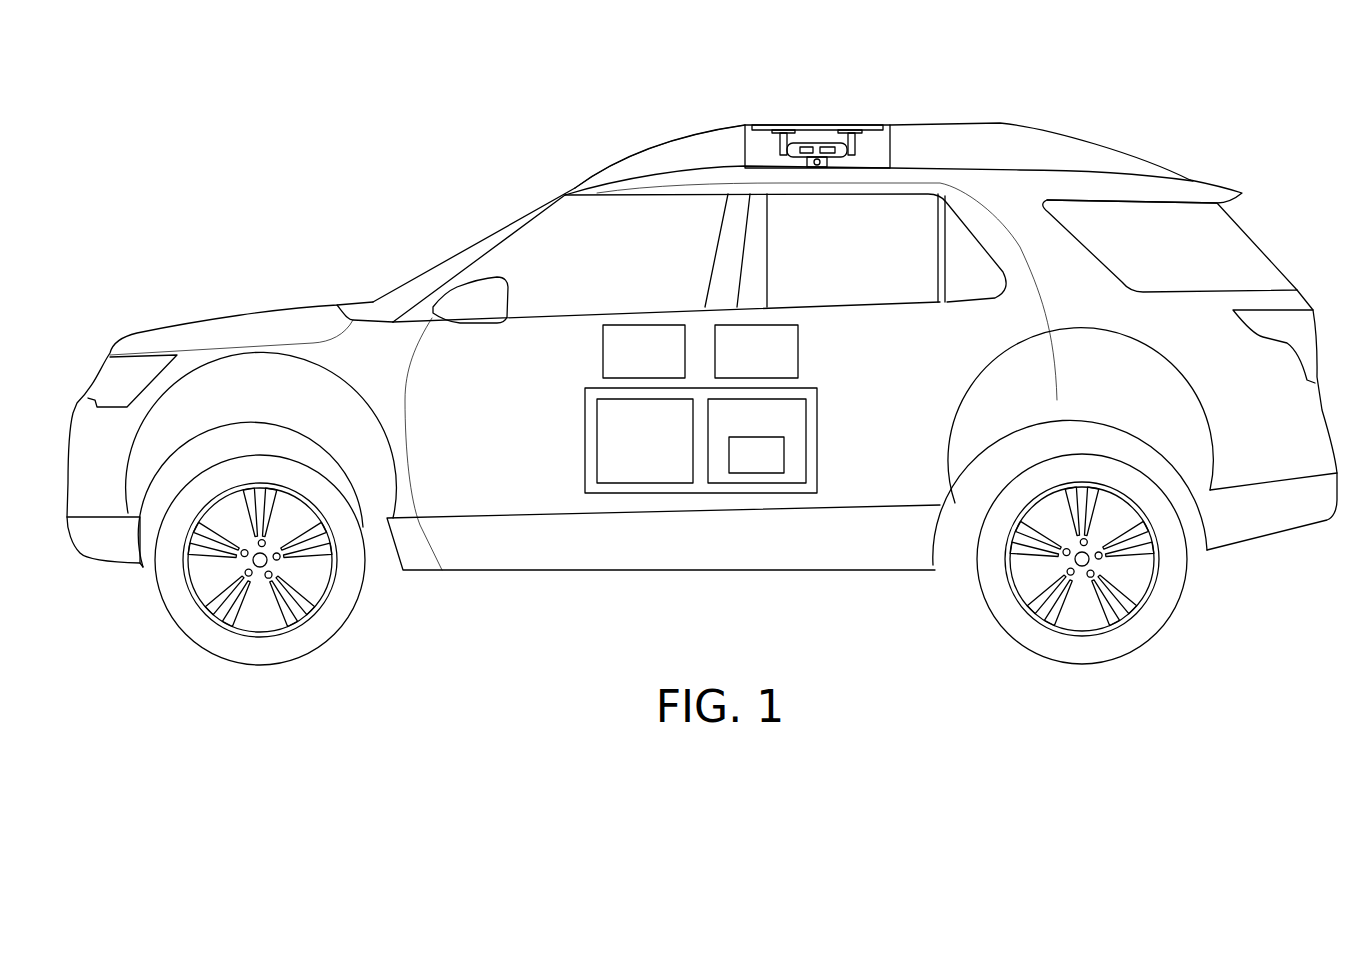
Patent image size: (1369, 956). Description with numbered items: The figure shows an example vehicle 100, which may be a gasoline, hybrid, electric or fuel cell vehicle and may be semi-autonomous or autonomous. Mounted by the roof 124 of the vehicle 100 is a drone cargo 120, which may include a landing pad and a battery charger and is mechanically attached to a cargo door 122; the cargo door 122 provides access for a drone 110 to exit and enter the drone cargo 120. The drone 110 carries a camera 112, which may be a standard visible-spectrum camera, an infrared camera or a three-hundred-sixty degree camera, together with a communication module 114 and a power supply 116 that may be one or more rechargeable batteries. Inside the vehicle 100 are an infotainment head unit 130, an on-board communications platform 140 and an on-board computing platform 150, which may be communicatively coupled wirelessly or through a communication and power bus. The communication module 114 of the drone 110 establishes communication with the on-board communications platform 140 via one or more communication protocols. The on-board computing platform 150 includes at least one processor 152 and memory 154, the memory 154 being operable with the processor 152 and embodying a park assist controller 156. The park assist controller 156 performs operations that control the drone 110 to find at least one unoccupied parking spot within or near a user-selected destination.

The vehicle 100 is at (288, 185).
The drone 110 is at (865, 147).
The camera 112 is at (745, 142).
The communication module 114 is at (825, 143).
The power supply 116 is at (808, 143).
The drone cargo 120 is at (745, 138).
The cargo door 122 is at (788, 130).
The roof 124 is at (684, 129).
The infotainment head unit 130 is at (628, 362).
The on-board communications platform 140 is at (740, 362).
The on-board computing platform 150 is at (817, 463).
The processor 152 is at (597, 420).
The memory 154 is at (806, 418).
The park assist controller 156 is at (741, 465).